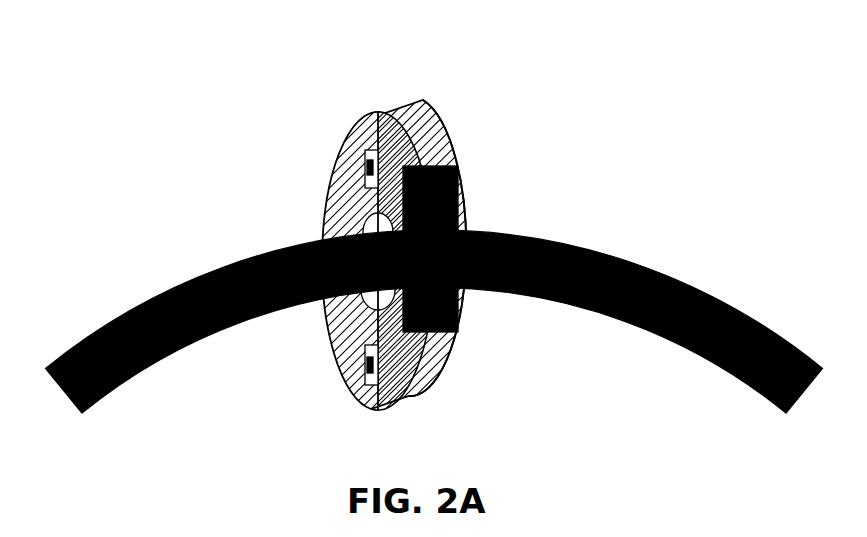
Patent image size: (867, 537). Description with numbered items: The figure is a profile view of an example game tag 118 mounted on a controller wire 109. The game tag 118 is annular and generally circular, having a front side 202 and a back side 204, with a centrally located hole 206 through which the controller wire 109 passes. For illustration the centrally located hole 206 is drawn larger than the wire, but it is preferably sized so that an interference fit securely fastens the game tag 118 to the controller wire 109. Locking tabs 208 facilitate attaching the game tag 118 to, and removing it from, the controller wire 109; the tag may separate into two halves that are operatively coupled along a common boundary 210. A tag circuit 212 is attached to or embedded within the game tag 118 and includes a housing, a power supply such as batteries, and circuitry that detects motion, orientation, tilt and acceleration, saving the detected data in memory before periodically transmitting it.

The controller wire 109 is at (132, 305).
The game tag 118 is at (462, 155).
The front side 202 is at (368, 120).
The back side 204 is at (450, 118).
The centrally located hole 206 is at (369, 215).
The locking tabs 208 is at (363, 153).
The common boundary 210 is at (380, 113).
The tag circuit 212 is at (466, 190).